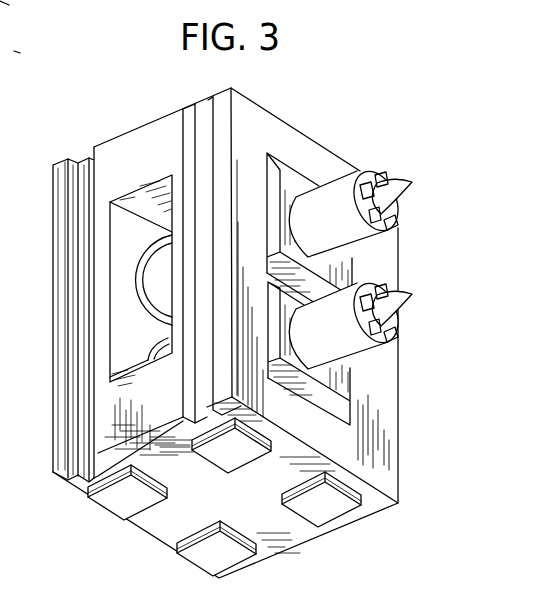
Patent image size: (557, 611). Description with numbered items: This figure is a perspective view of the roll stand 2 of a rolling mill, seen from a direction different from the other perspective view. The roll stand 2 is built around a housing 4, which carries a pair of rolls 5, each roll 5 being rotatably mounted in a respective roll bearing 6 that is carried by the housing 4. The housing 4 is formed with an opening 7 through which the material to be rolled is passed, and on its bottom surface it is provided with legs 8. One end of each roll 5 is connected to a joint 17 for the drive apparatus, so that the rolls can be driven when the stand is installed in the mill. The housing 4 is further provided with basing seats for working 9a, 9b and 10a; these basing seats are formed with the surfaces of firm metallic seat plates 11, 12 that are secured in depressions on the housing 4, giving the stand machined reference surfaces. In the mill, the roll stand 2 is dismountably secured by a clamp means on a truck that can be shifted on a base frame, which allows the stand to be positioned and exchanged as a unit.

The roll stand 2 is at (264, 104).
The housing 4 is at (278, 126).
The roll 5 is at (140, 275).
The roll bearing 6 is at (289, 186).
The opening 7 is at (120, 243).
The leg 8 is at (177, 553).
The basing seat for working 9a is at (87, 313).
The basing seat for working 9b is at (205, 153).
The basing seat for working 10a is at (93, 371).
The metallic seat plate 11 is at (87, 343).
The metallic seat plate 12 is at (206, 111).
The joint for drive apparatus 17 is at (359, 168).